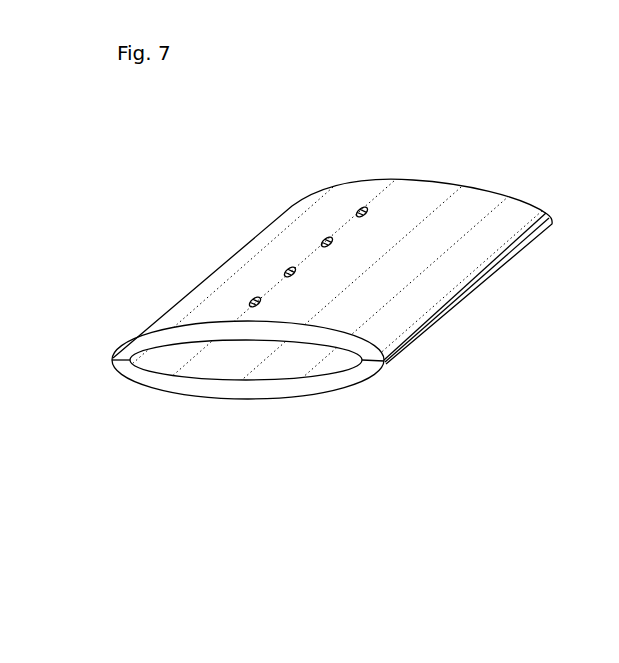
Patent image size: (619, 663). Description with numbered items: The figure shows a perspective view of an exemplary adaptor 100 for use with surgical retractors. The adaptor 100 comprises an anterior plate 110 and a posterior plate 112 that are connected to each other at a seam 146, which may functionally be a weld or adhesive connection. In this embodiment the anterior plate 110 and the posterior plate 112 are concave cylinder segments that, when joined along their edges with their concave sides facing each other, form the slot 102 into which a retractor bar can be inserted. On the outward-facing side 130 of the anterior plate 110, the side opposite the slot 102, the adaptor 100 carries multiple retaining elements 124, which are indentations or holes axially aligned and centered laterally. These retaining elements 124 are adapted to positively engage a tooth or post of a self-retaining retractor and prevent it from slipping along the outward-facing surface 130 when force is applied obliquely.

The adaptor 100 is at (323, 287).
The anterior plate 110 is at (309, 197).
The retaining elements 124 is at (364, 210).
The outward-facing surface 130 is at (495, 200).
The slot 102 is at (222, 357).
The posterior plate 112 is at (257, 395).
The seam 146 is at (113, 360).